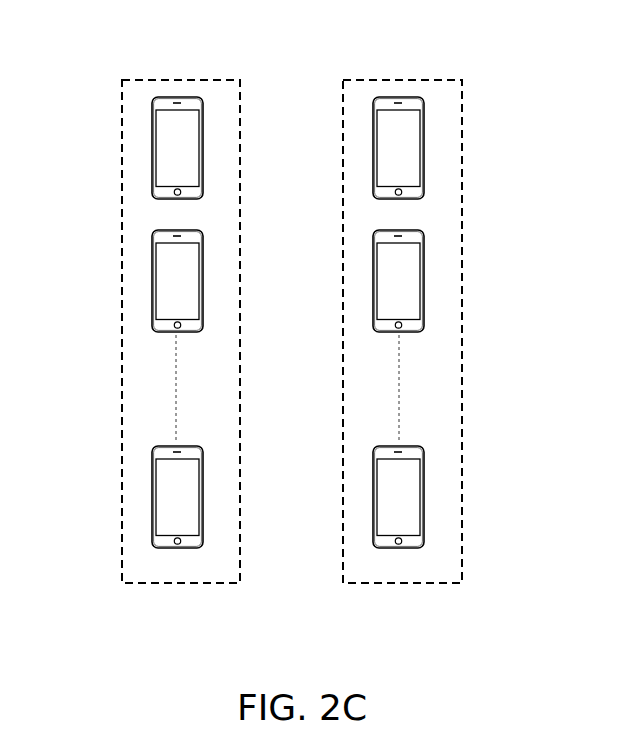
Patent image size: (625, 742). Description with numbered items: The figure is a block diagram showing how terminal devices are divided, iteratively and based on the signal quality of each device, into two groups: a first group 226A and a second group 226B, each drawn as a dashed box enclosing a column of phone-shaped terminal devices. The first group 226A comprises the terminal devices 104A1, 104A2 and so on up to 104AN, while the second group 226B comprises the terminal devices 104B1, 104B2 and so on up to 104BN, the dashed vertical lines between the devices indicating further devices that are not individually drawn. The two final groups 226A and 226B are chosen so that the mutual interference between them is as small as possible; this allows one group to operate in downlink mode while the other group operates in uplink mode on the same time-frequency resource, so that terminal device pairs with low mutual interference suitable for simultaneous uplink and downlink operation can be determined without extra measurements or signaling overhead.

The first group 226A is at (178, 80).
The second group 226B is at (407, 80).
The terminal device 104A1 is at (153, 156).
The terminal device 104A2 is at (153, 280).
The terminal device 104AN is at (152, 503).
The terminal device 104B1 is at (424, 145).
The terminal device 104B2 is at (424, 280).
The terminal device 104BN is at (424, 503).